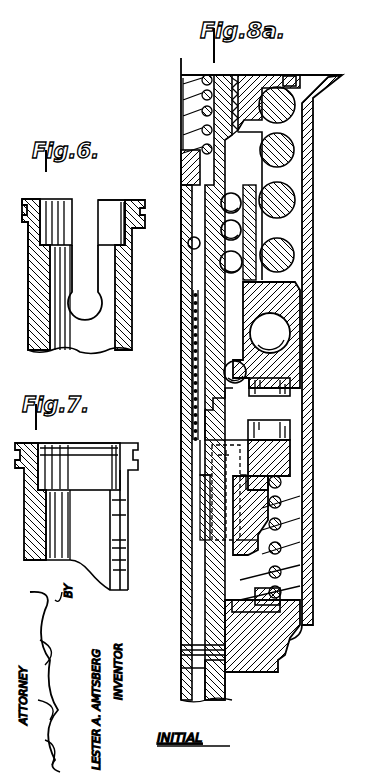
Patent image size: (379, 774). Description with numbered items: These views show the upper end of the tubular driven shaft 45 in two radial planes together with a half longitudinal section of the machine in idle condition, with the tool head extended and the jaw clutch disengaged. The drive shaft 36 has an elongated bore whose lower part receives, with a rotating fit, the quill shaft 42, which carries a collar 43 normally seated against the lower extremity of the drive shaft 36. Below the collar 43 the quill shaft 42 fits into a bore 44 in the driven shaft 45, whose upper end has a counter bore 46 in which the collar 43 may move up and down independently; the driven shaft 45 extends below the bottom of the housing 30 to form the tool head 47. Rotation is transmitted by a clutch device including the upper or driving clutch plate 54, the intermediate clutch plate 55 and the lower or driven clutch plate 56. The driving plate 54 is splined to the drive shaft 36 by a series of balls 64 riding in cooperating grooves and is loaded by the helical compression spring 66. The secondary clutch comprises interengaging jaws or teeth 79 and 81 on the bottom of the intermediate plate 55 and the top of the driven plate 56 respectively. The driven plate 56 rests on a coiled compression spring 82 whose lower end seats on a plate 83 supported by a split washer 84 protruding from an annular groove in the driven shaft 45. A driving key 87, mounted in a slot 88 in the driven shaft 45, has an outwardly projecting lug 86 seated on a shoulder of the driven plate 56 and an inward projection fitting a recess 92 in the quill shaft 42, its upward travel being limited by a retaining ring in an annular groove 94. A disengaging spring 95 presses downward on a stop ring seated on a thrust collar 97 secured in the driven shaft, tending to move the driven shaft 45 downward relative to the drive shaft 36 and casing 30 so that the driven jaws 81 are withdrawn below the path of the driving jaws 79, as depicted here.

In FIG. 8a, the housing 30 is at (313, 150).
In FIG. 8a, the drive shaft 36 is at (210, 338).
In FIG. 8a, the quill shaft 42 is at (200, 308).
In FIG. 8a, the collar 43 is at (220, 407).
In FIG. 6, the bore 44 is at (70, 352).
In FIG. 7, the bore 44 is at (45, 545).
In FIG. 6, the driven shaft 45 is at (147, 193).
In FIG. 7, the driven shaft 45 is at (145, 440).
In FIG. 8a, the driven shaft 45 is at (232, 586).
In FIG. 6, the counter bore 46 is at (125, 220).
In FIG. 7, the counter bore 46 is at (120, 465).
In FIG. 8a, the tool head 47 is at (228, 697).
In FIG. 8a, the upper or driving clutch plate 54 is at (282, 300).
In FIG. 8a, the intermediate clutch plate 55 is at (300, 350).
In FIG. 8a, the lower or driven clutch plate 56 is at (300, 466).
In FIG. 8a, the balls 64 is at (262, 192).
In FIG. 8a, the helical compression spring 66 is at (288, 105).
In FIG. 8a, the jaws or teeth 79 is at (292, 388).
In FIG. 8a, the jaws or teeth 81 is at (292, 430).
In FIG. 8a, the coiled compression spring 82 is at (283, 546).
In FIG. 8a, the plate 83 is at (262, 606).
In FIG. 8a, the split washer 84 is at (300, 636).
In FIG. 8a, the outwardly projecting lug 86 is at (262, 492).
In FIG. 8a, the driving key 87 is at (258, 520).
In FIG. 6, the slot 88 is at (102, 284).
In FIG. 7, the slot 88 is at (125, 503).
In FIG. 8a, the recess 92 is at (200, 432).
In FIG. 6, the annular groove 94 is at (150, 212).
In FIG. 7, the annular groove 94 is at (18, 450).
In FIG. 8a, the annular groove 94 is at (197, 114).
In FIG. 8a, the disengaging spring 95 is at (200, 540).
In FIG. 8a, the thrust collar 97 is at (222, 612).